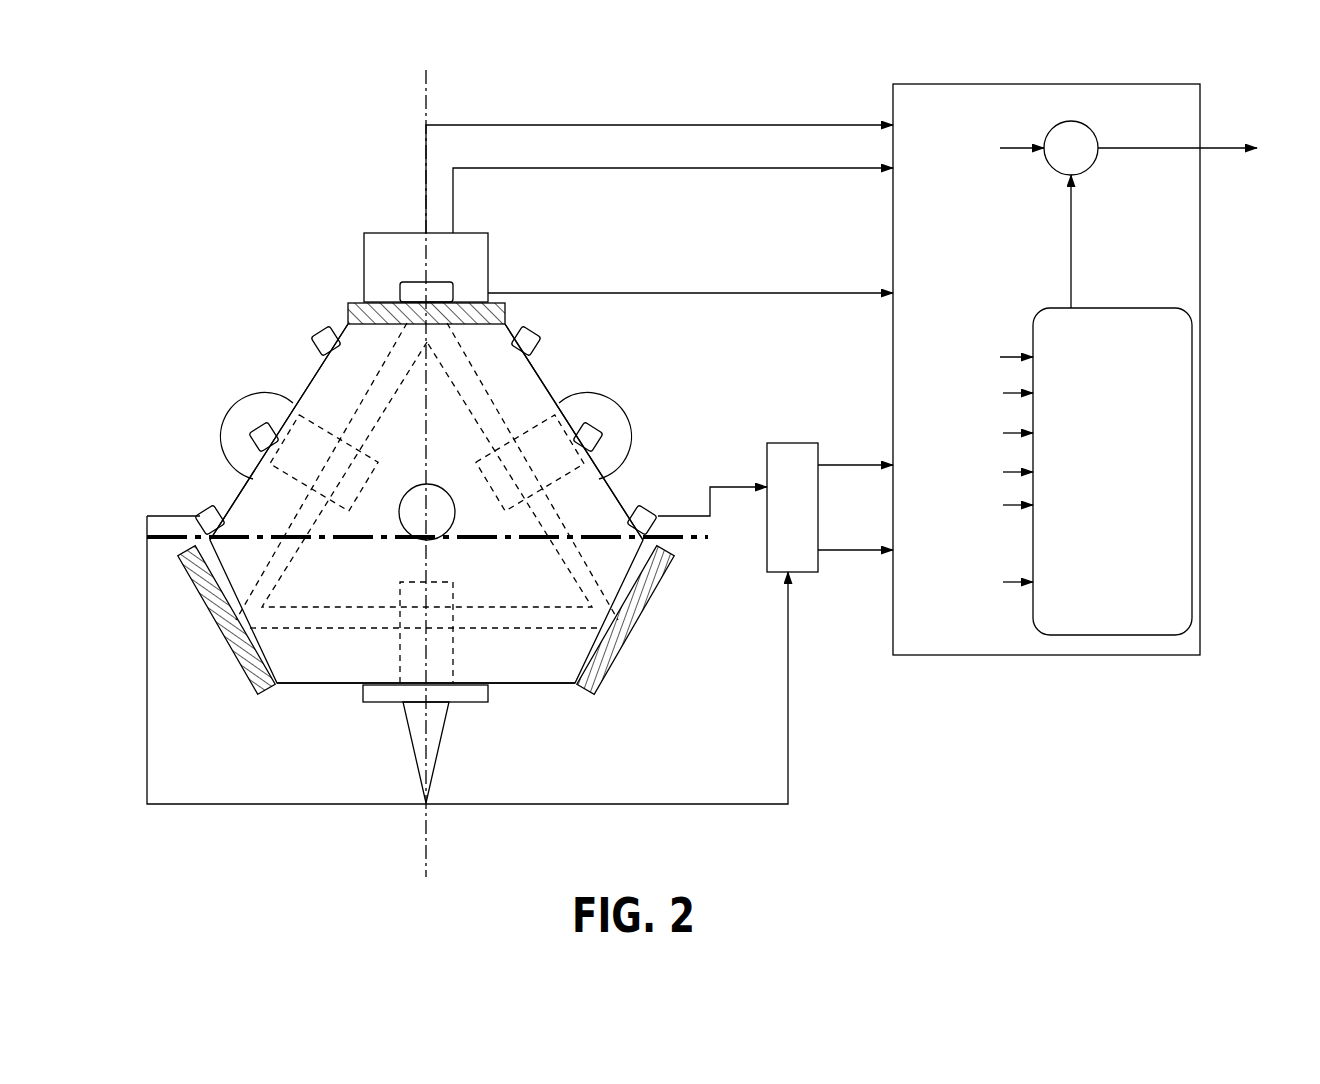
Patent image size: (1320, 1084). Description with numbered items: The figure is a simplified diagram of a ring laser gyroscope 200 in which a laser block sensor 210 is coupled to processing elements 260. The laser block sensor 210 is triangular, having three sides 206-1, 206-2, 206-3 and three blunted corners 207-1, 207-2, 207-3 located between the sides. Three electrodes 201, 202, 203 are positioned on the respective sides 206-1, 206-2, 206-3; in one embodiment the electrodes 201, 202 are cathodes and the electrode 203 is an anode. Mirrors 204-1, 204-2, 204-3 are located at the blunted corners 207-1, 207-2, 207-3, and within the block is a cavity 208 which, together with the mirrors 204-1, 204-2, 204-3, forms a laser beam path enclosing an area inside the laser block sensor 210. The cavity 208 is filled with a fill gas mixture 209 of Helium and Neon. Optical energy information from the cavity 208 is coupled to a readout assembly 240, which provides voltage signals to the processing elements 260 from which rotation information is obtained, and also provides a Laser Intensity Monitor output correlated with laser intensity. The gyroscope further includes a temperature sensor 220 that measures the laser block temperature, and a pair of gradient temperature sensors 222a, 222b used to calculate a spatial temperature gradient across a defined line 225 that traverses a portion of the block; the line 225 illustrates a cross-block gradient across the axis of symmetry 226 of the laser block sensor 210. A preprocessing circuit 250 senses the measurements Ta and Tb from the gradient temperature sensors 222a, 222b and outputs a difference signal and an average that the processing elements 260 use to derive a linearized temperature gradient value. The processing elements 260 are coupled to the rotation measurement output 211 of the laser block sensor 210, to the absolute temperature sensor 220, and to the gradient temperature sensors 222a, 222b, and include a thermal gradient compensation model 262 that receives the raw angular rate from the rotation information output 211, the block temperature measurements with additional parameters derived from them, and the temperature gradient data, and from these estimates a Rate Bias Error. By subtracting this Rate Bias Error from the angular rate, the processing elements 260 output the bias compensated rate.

The ring laser gyroscope 200 is at (850, 812).
The electrode 201 is at (233, 405).
The electrode 202 is at (623, 412).
The electrode 203 is at (446, 727).
The mirror 204-1 is at (370, 333).
The mirror 204-2 is at (276, 658).
The mirror 204-3 is at (579, 657).
The side 206-1 is at (309, 382).
The side 206-2 is at (543, 377).
The side 206-3 is at (346, 686).
The blunted corner 207-1 is at (345, 307).
The blunted corner 207-2 is at (240, 660).
The blunted corner 207-3 is at (624, 652).
The cavity 208 is at (293, 513).
The fill gas mixture 209 is at (283, 550).
The laser block sensor 210 is at (392, 170).
The rotation measurement output 211 is at (659, 165).
The temperature sensor 220 is at (414, 282).
The gradient temperature sensor 222a is at (200, 512).
The gradient temperature sensor 222b is at (653, 506).
The defined line 225 is at (692, 540).
The axis of symmetry 226 is at (423, 832).
The readout assembly 240 is at (488, 265).
The preprocessing circuit 250 is at (800, 443).
The processing elements 260 is at (1070, 657).
The thermal gradient compensation model 262 is at (1105, 307).